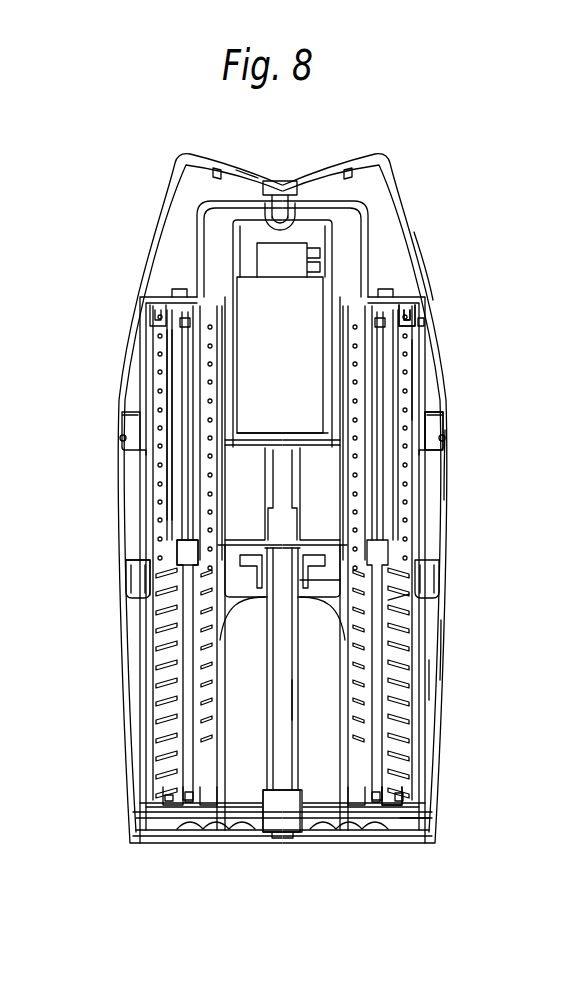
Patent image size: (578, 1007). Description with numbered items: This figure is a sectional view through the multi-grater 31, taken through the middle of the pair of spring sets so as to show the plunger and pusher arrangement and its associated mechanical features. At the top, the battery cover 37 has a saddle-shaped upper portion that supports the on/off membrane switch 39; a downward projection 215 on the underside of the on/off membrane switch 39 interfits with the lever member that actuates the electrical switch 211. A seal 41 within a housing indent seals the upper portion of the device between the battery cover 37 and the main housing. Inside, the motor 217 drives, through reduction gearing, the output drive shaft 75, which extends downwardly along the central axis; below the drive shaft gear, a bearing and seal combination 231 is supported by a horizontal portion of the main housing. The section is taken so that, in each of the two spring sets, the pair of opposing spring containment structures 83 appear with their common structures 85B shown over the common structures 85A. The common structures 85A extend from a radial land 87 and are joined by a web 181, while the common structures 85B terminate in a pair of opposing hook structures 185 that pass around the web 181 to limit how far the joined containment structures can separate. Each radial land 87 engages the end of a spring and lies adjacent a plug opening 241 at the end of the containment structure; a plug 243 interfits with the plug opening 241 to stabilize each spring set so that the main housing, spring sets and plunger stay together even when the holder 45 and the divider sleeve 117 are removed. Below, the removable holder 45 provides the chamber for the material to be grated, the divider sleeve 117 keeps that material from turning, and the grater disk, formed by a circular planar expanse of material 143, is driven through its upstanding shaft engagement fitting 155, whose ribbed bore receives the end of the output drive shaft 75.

The multi-grater 31 is at (463, 468).
The battery cover 37 is at (398, 238).
The on/off membrane switch 39 is at (247, 173).
The seal 41 is at (445, 438).
The holder 45 is at (440, 652).
The output drive shaft 75 is at (287, 698).
The spring containment structure 83 is at (172, 323).
The first common pair of spaced apart elongate structures 85A is at (383, 612).
The second common pair of spaced apart elongate structures 85B is at (397, 370).
The radial land 87 is at (400, 320).
The divider sleeve 117 is at (430, 680).
The circular planar expanse of material 143 is at (432, 821).
The upstanding shaft engagement fitting 155 is at (263, 797).
The web 181 is at (180, 550).
The opposing hook structures 185 is at (173, 568).
The electrical switch 211 is at (273, 257).
The downward projection 215 is at (282, 205).
The motor 217 is at (263, 297).
The bearing and seal combination 231 is at (300, 585).
The plug opening 241 is at (200, 323).
The plug 243 is at (427, 327).